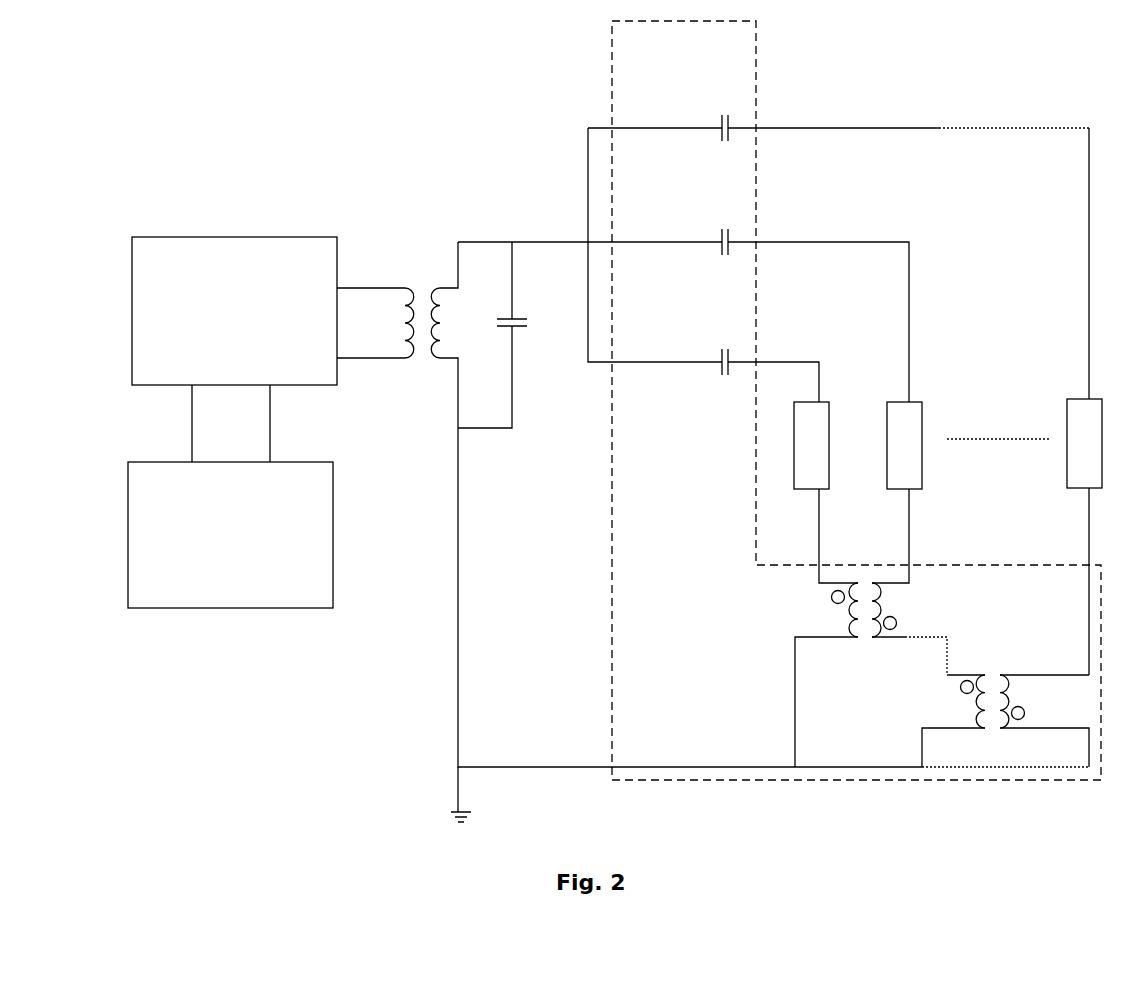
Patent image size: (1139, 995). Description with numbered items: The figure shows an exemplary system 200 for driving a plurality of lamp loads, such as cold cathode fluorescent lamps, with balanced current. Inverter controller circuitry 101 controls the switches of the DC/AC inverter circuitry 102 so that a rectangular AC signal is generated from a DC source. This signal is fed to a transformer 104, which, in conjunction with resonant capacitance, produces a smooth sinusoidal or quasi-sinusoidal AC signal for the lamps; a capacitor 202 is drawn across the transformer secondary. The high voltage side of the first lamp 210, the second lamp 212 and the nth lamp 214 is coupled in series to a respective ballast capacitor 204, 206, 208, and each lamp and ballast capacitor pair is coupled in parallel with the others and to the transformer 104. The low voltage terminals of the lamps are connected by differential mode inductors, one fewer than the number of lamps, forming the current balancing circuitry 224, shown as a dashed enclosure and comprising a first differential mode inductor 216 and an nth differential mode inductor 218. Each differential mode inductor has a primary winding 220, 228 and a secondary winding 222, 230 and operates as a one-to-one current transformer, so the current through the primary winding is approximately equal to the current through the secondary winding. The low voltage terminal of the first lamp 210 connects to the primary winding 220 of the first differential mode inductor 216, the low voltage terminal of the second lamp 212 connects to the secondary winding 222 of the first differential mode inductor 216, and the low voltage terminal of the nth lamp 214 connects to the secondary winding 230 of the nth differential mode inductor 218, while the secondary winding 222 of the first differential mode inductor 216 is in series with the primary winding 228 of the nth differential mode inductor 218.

The system 200 is at (311, 90).
The DC/AC inverter circuitry 102 is at (167, 237).
The inverter controller circuitry 101 is at (297, 462).
The transformer 104 is at (409, 214).
The capacitor Cp 202 is at (514, 335).
The ballast capacitor 204 is at (717, 350).
The ballast capacitor 206 is at (705, 230).
The ballast capacitor 208 is at (705, 118).
The lamp L1 210 is at (768, 467).
The lamp L2 212 is at (935, 465).
The lamp Ln 214 is at (1060, 401).
The differential mode inductor DM1 216 is at (876, 661).
The differential mode inductor DMn 218 is at (971, 707).
The primary winding 220 is at (820, 597).
The secondary winding 222 is at (916, 623).
The current balancing circuitry 224 is at (607, 555).
The primary winding 228 is at (948, 701).
The secondary winding 230 is at (1005, 701).